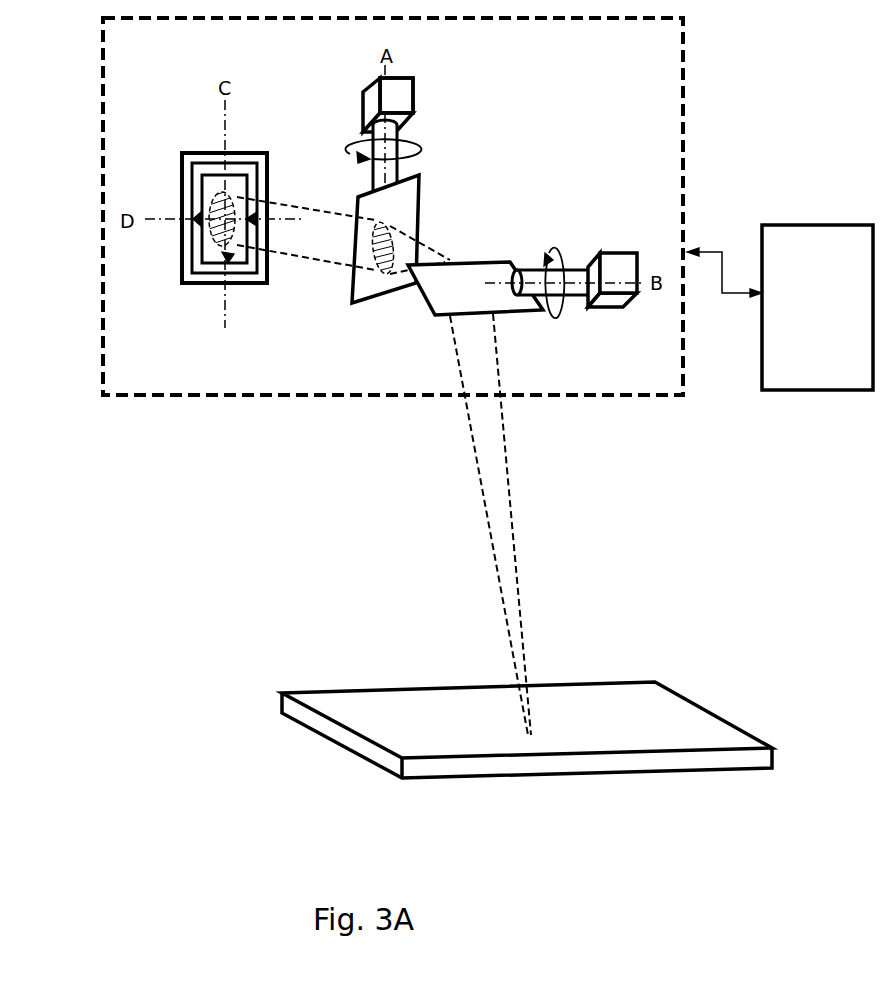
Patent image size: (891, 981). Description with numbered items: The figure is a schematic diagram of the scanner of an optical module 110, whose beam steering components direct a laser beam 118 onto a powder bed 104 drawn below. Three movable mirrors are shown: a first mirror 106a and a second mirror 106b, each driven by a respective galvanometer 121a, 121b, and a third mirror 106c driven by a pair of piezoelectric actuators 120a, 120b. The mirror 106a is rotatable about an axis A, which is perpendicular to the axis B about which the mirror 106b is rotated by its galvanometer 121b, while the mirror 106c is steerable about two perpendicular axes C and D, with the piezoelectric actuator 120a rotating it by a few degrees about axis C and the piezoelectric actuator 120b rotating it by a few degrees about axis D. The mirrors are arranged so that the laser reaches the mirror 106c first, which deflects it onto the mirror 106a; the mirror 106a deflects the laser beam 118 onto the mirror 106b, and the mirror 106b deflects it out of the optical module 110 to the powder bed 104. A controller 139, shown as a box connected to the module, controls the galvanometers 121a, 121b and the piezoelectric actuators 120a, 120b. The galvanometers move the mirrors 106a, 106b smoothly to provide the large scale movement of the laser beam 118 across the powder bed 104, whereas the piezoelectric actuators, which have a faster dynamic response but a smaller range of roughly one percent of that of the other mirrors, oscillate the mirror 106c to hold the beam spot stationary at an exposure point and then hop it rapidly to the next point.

The powder bed 104 is at (552, 789).
The first movable mirror 106a is at (363, 303).
The second movable mirror 106b is at (493, 255).
The third movable mirror 106c is at (206, 264).
The optical module 110 is at (794, 115).
The laser beam 118 is at (534, 487).
The first piezoelectric actuator 120a is at (187, 234).
The second piezoelectric actuator 120b is at (237, 164).
The first galvanometer 121a is at (420, 103).
The second galvanometer 121b is at (614, 238).
The controller 139 is at (803, 404).